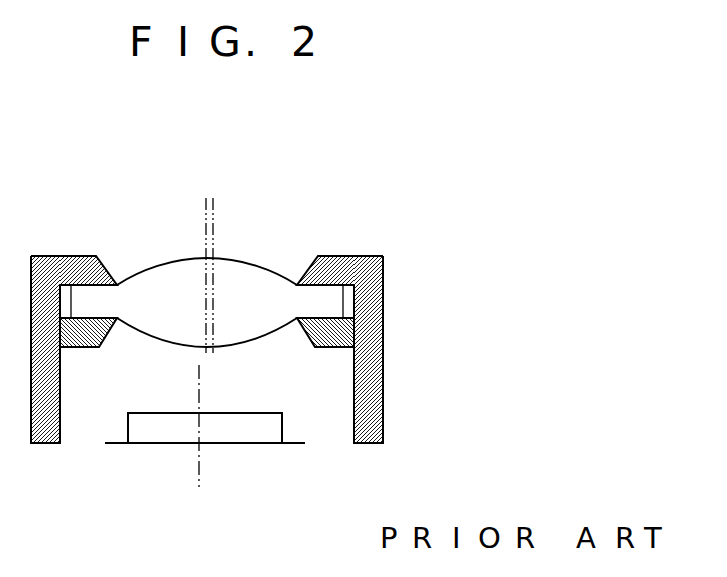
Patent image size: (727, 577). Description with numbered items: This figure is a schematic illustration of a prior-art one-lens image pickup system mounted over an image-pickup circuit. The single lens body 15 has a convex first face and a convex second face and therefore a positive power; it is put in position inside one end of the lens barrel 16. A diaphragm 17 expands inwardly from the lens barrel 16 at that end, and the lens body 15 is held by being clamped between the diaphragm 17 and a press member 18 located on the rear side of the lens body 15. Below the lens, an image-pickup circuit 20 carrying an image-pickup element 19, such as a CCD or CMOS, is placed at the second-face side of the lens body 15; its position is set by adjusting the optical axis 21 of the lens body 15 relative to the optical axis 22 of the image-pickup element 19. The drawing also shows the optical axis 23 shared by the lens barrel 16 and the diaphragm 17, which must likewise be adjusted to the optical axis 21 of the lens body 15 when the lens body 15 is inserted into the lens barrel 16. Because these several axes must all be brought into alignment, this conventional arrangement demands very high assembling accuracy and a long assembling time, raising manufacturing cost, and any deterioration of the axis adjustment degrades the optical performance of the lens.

The lens body 15 is at (240, 276).
The lens barrel 16 is at (384, 408).
The diaphragm 17 is at (336, 258).
The press member 18 is at (78, 350).
The image-pickup element 19 is at (248, 426).
The image-pickup circuit 20 is at (285, 445).
The optical axis of the lens body 21 is at (204, 231).
The optical axis of the image-pickup element 22 is at (197, 475).
The optical axis of the lens barrel and diaphragm 23 is at (215, 204).